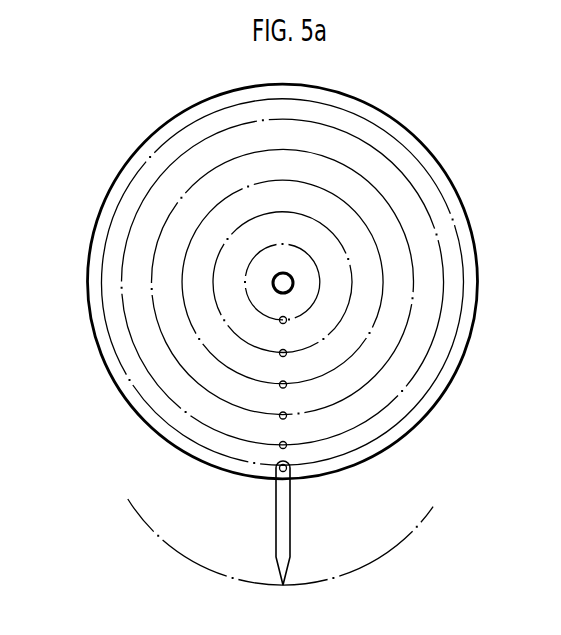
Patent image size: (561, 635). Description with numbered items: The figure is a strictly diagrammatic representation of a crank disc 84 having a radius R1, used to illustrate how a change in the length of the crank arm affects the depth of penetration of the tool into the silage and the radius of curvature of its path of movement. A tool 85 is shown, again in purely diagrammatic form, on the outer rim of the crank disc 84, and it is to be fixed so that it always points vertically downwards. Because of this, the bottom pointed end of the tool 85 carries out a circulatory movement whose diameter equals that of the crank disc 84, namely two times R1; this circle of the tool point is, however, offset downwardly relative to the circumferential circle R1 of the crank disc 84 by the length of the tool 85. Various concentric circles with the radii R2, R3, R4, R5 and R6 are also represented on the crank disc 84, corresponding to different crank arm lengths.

The crank disc 84 is at (438, 393).
The tool 85 is at (290, 527).
The radius of the crank disc R1 is at (468, 277).
The circle radius R2 is at (438, 253).
The circle radius R3 is at (410, 253).
The circle radius R4 is at (377, 253).
The circle radius R5 is at (343, 243).
The circle radius R6 is at (255, 231).